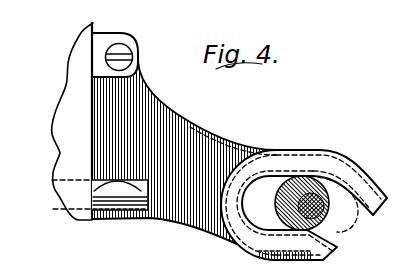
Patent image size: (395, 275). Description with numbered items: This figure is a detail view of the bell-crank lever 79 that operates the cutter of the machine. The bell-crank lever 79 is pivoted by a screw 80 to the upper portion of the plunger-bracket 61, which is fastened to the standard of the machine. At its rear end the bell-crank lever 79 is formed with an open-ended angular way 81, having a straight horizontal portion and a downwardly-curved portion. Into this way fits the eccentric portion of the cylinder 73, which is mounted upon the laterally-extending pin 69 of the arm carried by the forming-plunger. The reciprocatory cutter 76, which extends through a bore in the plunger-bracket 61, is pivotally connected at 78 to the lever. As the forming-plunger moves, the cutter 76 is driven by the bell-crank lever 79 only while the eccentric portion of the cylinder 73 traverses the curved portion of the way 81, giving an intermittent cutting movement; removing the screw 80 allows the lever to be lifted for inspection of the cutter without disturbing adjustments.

The plunger-bracket 61 is at (60, 153).
The pin 69 is at (323, 215).
The cylinder 73 is at (281, 190).
The reciprocatory cutter 76 is at (138, 202).
The pivotal connection 78 is at (112, 212).
The bell-crank lever 79 is at (178, 128).
The screw 80 is at (120, 53).
The open-ended angular way 81 is at (268, 184).